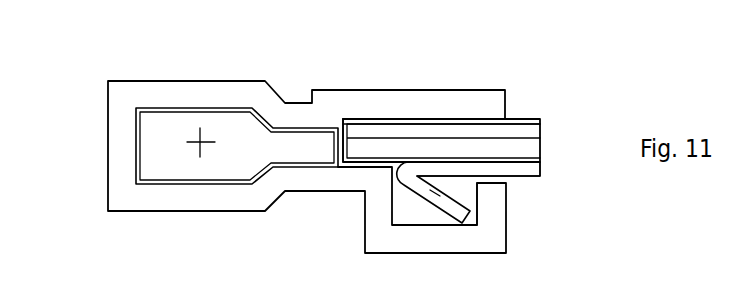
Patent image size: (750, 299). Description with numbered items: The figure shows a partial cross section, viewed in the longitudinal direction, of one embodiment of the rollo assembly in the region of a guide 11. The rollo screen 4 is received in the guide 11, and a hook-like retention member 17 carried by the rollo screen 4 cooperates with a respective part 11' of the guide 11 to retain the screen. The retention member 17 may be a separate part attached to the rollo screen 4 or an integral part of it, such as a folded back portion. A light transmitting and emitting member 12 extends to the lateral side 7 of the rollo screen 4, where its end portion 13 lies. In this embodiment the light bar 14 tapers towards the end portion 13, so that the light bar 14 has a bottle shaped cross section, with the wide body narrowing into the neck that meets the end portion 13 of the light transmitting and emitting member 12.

The guide 11 is at (291, 183).
The part of the guide 11' is at (549, 234).
The light bar 14 is at (152, 152).
The light transmitting and emitting member 12 is at (520, 148).
The rollo screen 4 is at (530, 130).
The lateral side of the rollo screen 7 is at (360, 128).
The retention member 17 is at (432, 193).
The end portion 13 is at (353, 147).